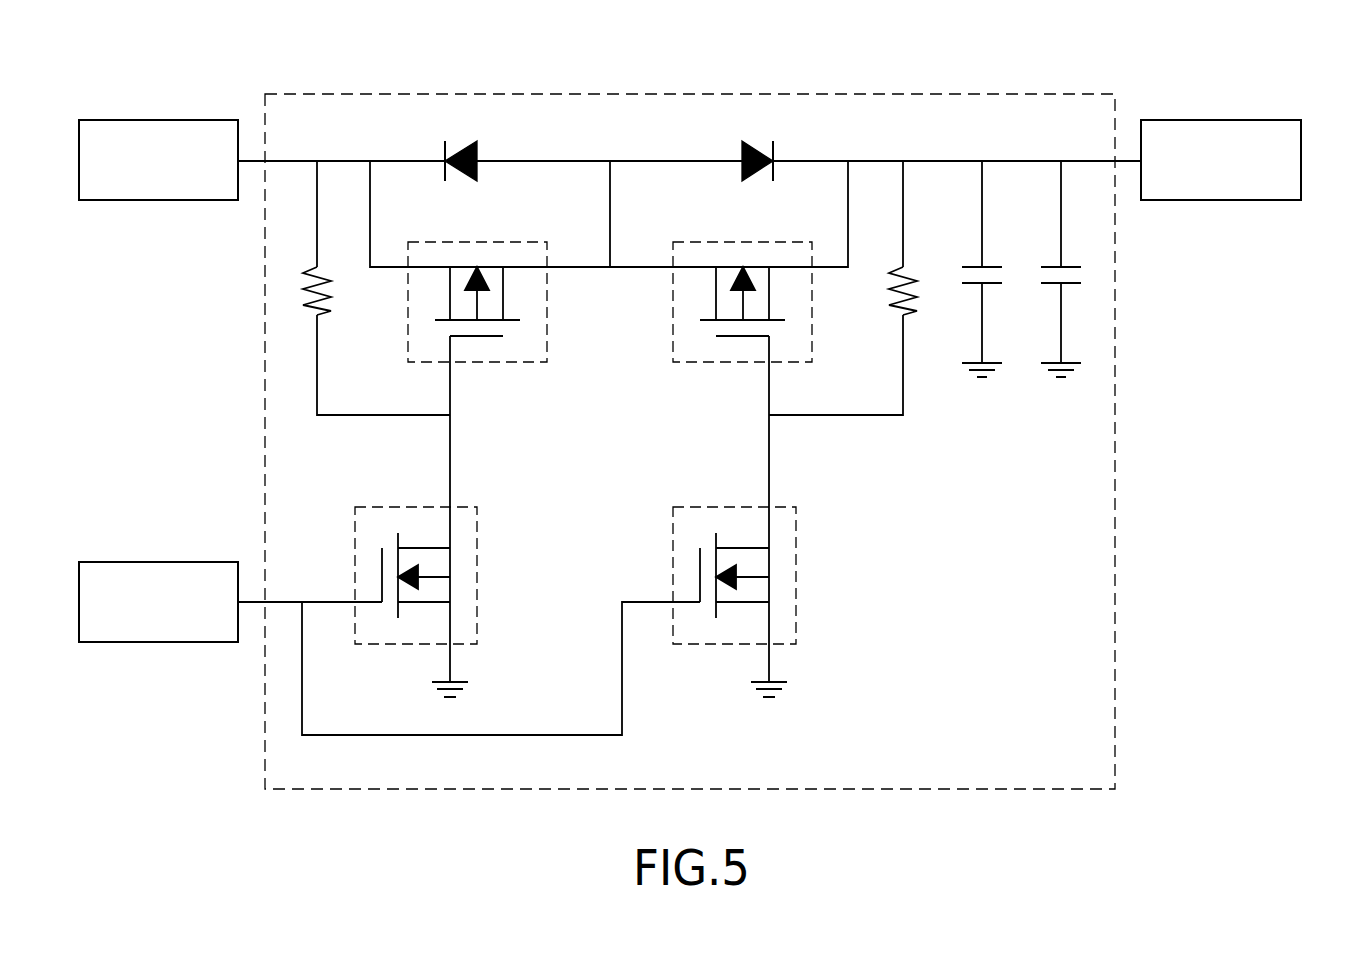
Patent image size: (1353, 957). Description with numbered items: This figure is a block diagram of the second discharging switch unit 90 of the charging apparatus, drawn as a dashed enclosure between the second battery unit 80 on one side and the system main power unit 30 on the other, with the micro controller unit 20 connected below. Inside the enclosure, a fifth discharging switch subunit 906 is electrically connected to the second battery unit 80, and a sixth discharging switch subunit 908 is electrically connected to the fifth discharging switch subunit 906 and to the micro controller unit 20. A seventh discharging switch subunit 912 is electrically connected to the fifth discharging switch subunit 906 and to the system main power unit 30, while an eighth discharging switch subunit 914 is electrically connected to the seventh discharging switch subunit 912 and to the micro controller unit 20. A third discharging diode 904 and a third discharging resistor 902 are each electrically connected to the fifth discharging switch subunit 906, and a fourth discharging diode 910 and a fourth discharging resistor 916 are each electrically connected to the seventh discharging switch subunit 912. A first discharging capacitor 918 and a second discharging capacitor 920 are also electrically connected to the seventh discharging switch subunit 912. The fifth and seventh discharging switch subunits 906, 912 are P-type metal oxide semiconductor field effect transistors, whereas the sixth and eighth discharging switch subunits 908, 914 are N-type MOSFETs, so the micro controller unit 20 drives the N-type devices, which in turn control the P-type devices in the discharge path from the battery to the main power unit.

The micro controller unit 20 is at (157, 562).
The system main power unit 30 is at (1222, 120).
The second battery unit 80 is at (157, 120).
The second discharging switch unit 90 is at (1062, 789).
The third discharging resistor 902 is at (333, 291).
The third discharging diode 904 is at (458, 142).
The fifth discharging switch subunit 906 is at (477, 357).
The sixth discharging switch subunit 908 is at (472, 575).
The fourth discharging diode 910 is at (763, 142).
The seventh discharging switch subunit 912 is at (742, 357).
The eighth discharging switch subunit 914 is at (790, 575).
The fourth discharging resistor 916 is at (888, 291).
The first discharging capacitor 918 is at (970, 288).
The second discharging capacitor 920 is at (1072, 288).